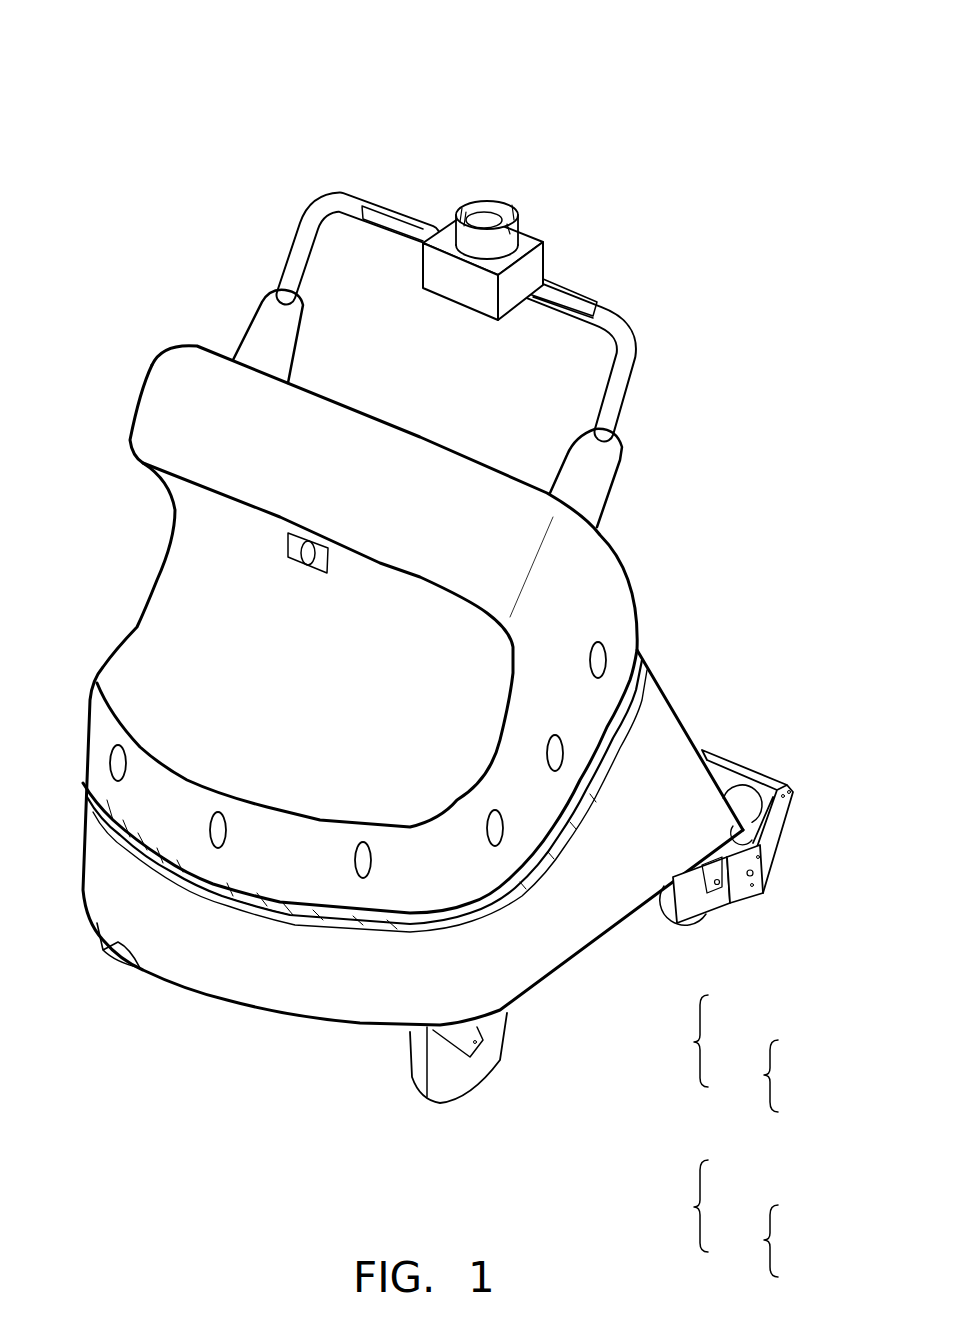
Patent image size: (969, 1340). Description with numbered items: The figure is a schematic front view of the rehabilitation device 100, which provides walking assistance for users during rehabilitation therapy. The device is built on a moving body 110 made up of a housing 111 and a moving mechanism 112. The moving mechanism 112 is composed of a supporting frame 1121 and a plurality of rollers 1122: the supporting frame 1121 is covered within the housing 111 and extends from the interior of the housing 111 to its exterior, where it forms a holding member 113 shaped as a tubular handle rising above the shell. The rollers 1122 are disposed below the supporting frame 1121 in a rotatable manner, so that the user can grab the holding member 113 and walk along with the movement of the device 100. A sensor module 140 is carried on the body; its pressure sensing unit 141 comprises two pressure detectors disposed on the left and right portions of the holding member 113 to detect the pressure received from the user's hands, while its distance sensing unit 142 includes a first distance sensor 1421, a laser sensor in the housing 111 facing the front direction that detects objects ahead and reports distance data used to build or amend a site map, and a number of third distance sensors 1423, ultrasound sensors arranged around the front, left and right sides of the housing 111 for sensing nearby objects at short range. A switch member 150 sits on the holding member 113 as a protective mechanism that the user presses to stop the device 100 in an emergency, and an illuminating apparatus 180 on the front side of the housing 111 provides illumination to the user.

The rehabilitation device 100 is at (77, 39).
The moving body 110 is at (675, 1041).
The housing 111 is at (178, 350).
The moving mechanism 112 is at (744, 1076).
The supporting frame 1121 is at (630, 388).
The rollers 1122 is at (103, 950).
The holding member 113 is at (630, 338).
The sensor module 140 is at (675, 1206).
The pressure sensing unit 141 is at (397, 230).
The distance sensing unit 142 is at (744, 1241).
The first distance sensor 1421 is at (225, 880).
The third distance sensors 1423 is at (363, 860).
The switch member 150 is at (487, 217).
The illuminating apparatus 180 is at (307, 553).